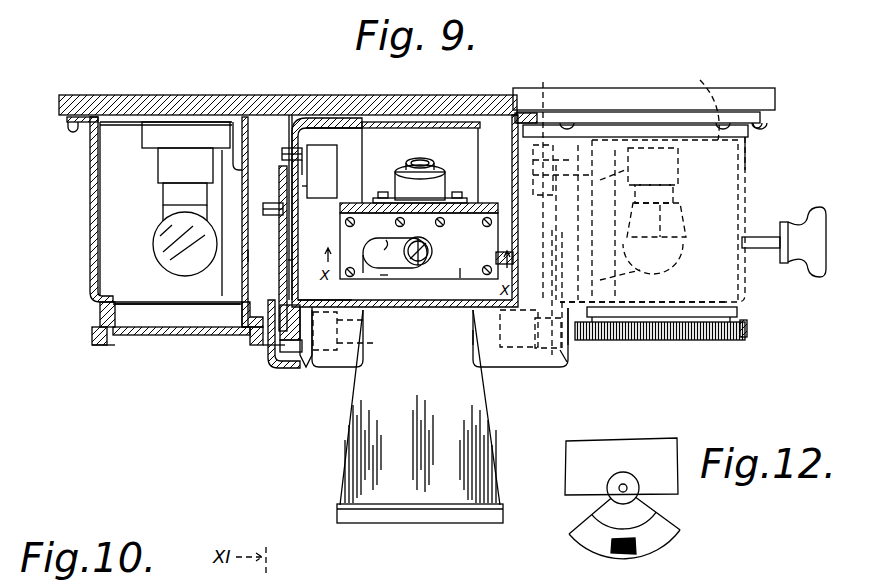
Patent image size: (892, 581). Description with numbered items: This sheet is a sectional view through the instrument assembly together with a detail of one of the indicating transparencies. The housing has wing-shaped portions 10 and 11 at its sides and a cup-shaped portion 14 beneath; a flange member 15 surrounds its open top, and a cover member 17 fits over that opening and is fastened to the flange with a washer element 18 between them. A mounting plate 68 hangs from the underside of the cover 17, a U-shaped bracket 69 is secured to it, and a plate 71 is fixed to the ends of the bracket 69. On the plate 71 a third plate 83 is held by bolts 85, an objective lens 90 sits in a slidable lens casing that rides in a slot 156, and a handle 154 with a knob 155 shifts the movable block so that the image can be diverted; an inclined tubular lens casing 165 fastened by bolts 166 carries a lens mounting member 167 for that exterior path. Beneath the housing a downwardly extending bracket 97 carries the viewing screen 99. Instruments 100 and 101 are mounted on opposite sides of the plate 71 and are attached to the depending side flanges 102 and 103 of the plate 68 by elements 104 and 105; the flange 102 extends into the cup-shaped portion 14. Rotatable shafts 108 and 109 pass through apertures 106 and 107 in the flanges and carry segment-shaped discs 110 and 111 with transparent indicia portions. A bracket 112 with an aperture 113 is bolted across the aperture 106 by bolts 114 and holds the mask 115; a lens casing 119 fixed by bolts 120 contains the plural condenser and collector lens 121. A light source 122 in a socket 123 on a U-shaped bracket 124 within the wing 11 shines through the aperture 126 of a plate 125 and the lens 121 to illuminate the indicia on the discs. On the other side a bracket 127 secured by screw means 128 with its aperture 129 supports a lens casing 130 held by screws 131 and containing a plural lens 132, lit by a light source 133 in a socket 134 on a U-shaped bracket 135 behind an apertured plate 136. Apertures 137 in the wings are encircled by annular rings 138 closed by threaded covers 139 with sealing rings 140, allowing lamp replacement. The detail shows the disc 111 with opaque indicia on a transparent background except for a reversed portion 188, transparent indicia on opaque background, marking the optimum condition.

In FIG. 9, the wing-shaped portion 10 is at (763, 170).
In FIG. 9, the wing-shaped portion 11 is at (80, 190).
In FIG. 9, the cup-shaped portion 14 is at (353, 368).
In FIG. 9, the flange member 15 is at (70, 128).
In FIG. 9, the cover member 17 is at (72, 94).
In FIG. 9, the washer element 18 is at (628, 109).
In FIG. 9, the mounting plate 68 is at (333, 118).
In FIG. 9, the U-shaped bracket 69 is at (464, 122).
In FIG. 9, the plate 71 is at (363, 274).
In FIG. 9, the third plate 83 is at (462, 277).
In FIG. 9, the bolts 85 is at (405, 225).
In FIG. 9, the objective lens 90 is at (418, 265).
In FIG. 9, the downwardly extending bracket 97 is at (420, 523).
In FIG. 9, the viewing screen 99 is at (358, 453).
In FIG. 9, the instrument 100 is at (328, 149).
In FIG. 9, the instrument 101 is at (513, 114).
In FIG. 12, the instrument 101 is at (623, 443).
In FIG. 9, the side flange 102 is at (278, 362).
In FIG. 9, the side flange 103 is at (560, 362).
In FIG. 9, the element 104 is at (302, 167).
In FIG. 9, the element 105 is at (557, 180).
In FIG. 9, the central aperture 106 is at (353, 318).
In FIG. 9, the aperture 107 is at (557, 170).
In FIG. 9, the rotatable shaft 108 is at (302, 188).
In FIG. 9, the rotatable shaft 109 is at (562, 258).
In FIG. 9, the segment-shaped disc 110 is at (285, 199).
In FIG. 9, the segment-shaped disc 111 is at (552, 212).
In FIG. 12, the segment-shaped disc 111 is at (597, 500).
In FIG. 9, the bracket 112 is at (285, 115).
In FIG. 9, the aperture 113 is at (288, 231).
In FIG. 9, the bolts 114 is at (270, 350).
In FIG. 9, the mask 115 is at (237, 337).
In FIG. 9, the lens casing 119 is at (221, 244).
In FIG. 9, the bolts 120 is at (262, 285).
In FIG. 9, the plural condenser and collector lens 121 is at (248, 251).
In FIG. 9, the light source 122 is at (162, 244).
In FIG. 9, the socket 123 is at (202, 173).
In FIG. 9, the U-shaped bracket 124 is at (117, 124).
In FIG. 9, the plate 125 is at (236, 165).
In FIG. 9, the aperture 126 is at (253, 268).
In FIG. 9, the bracket 127 is at (653, 259).
In FIG. 9, the screw means 128 is at (653, 175).
In FIG. 9, the aperture 129 is at (467, 278).
In FIG. 9, the lens casing 130 is at (656, 220).
In FIG. 9, the screws 131 is at (570, 347).
In FIG. 9, the plural lens 132 is at (645, 287).
In FIG. 9, the light source 133 is at (678, 207).
In FIG. 9, the socket 134 is at (675, 158).
In FIG. 9, the U-shaped bracket 135 is at (698, 100).
In FIG. 9, the plate 136 is at (660, 341).
In FIG. 9, the aperture 137 is at (128, 330).
In FIG. 9, the annular ring 138 is at (100, 308).
In FIG. 9, the cover 139 is at (97, 345).
In FIG. 9, the sealing ring 140 is at (223, 342).
In FIG. 9, the manually operable handle 154 is at (760, 237).
In FIG. 9, the knob 155 is at (802, 222).
In FIG. 9, the slot 156 is at (384, 250).
In FIG. 9, the inclined tubular lens casing 165 is at (443, 175).
In FIG. 9, the bolts 166 is at (385, 192).
In FIG. 9, the lens mounting member 167 is at (423, 160).
In FIG. 12, the reversed portion 188 is at (640, 552).